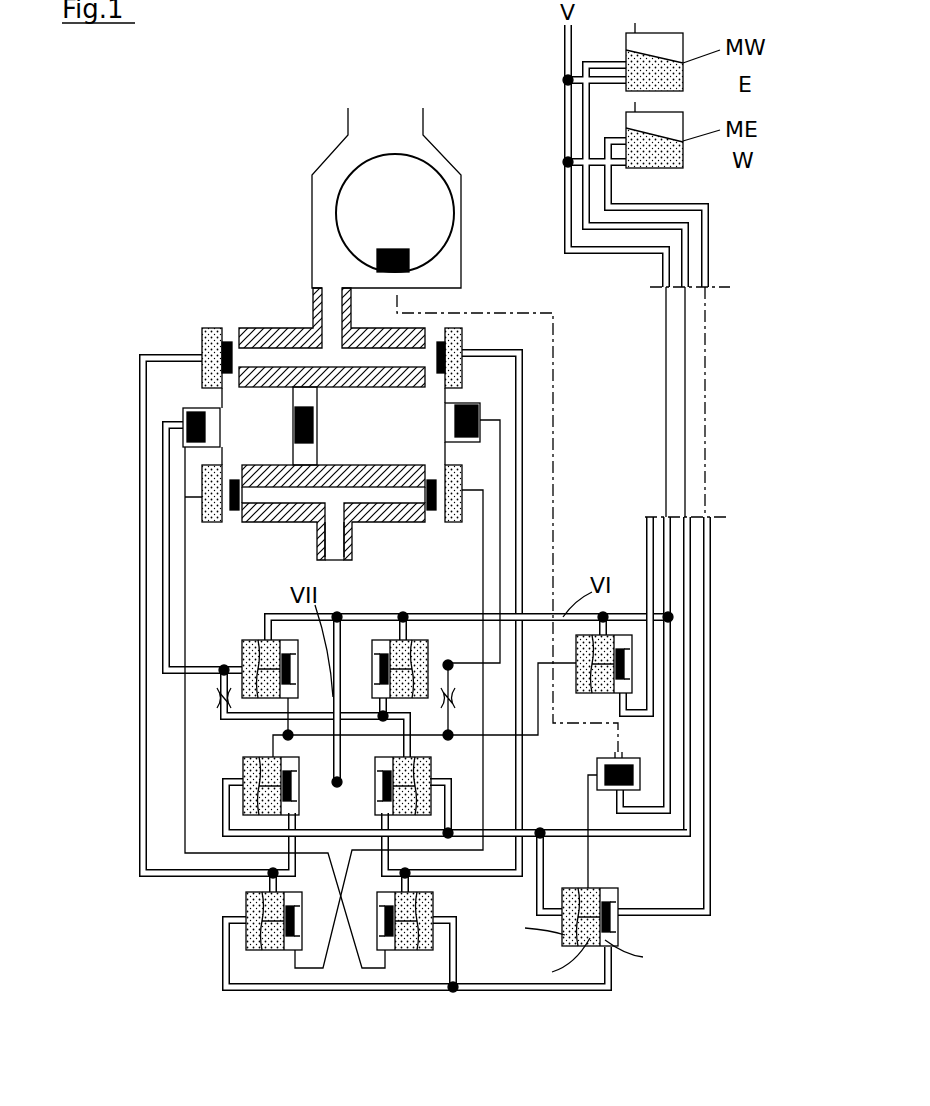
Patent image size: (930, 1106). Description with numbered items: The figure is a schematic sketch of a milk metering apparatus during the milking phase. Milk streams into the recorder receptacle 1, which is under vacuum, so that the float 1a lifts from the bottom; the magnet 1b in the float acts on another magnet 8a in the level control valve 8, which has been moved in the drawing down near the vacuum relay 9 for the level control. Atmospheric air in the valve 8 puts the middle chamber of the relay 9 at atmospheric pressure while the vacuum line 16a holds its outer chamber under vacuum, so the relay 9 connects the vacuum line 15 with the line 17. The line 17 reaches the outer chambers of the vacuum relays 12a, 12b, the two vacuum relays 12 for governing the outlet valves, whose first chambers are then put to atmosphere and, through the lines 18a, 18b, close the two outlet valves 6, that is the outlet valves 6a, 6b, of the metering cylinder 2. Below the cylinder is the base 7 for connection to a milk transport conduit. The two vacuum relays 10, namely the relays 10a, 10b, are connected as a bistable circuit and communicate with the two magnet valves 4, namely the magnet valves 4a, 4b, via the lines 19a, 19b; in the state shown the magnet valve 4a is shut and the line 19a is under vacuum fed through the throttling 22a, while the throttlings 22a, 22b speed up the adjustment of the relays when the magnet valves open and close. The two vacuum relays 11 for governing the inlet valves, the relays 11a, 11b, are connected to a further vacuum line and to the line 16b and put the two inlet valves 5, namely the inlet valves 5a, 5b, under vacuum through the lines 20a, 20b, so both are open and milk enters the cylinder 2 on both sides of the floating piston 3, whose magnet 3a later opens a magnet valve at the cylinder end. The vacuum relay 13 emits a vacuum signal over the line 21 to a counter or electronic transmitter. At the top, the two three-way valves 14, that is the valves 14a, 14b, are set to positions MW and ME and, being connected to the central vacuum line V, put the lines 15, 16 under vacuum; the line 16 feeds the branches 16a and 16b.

The receptacle 1 is at (327, 178).
The float 1a is at (437, 232).
The magnet 1b is at (409, 251).
The metering cylinder 2 is at (343, 345).
The floating piston 3 is at (300, 400).
The magnet 3a is at (313, 428).
The magnet valves 4 is at (361, 383).
The magnet valve 4a is at (183, 422).
The magnet valve 4b is at (480, 440).
The inlet valves 5 is at (371, 313).
The inlet valve 5a is at (202, 338).
The inlet valve 5b is at (460, 330).
The outlet valves 6 is at (273, 483).
The outlet valve 6a is at (205, 487).
The outlet valve 6b is at (458, 512).
The base 7 is at (330, 552).
The level control valve 8 is at (640, 767).
The magnet 8a is at (597, 775).
The vacuum relay for level control 9 is at (603, 890).
The vacuum relays connected as a bistable circuit 10 is at (250, 633).
The vacuum relay 10a is at (268, 685).
The vacuum relay 10b is at (430, 652).
The vacuum relays for governing the inlet valves 11 is at (274, 766).
The vacuum relay 11a is at (258, 790).
The vacuum relay 11b is at (410, 785).
The vacuum relays for governing the outlet valves 12 is at (333, 982).
The vacuum relay 12a is at (247, 920).
The vacuum relay 12b is at (433, 903).
The vacuum relay for governing a counter or an electronic transmitter 13 is at (620, 648).
The three-way valves 14 is at (613, 84).
The three-way valve 14a is at (668, 33).
The three-way valve 14b is at (668, 125).
The vacuum line 15 is at (706, 253).
The vacuum line 16 is at (707, 393).
The vacuum line 16a is at (543, 882).
The vacuum line 16b is at (448, 833).
The line 17 is at (467, 988).
The line 18a is at (187, 832).
The line 18b is at (487, 773).
The line 19a is at (165, 455).
The line 19b is at (503, 515).
The line 20a is at (143, 385).
The line 20b is at (522, 382).
The line 21 is at (653, 562).
The throttling 22a is at (218, 697).
The throttling 22b is at (452, 712).